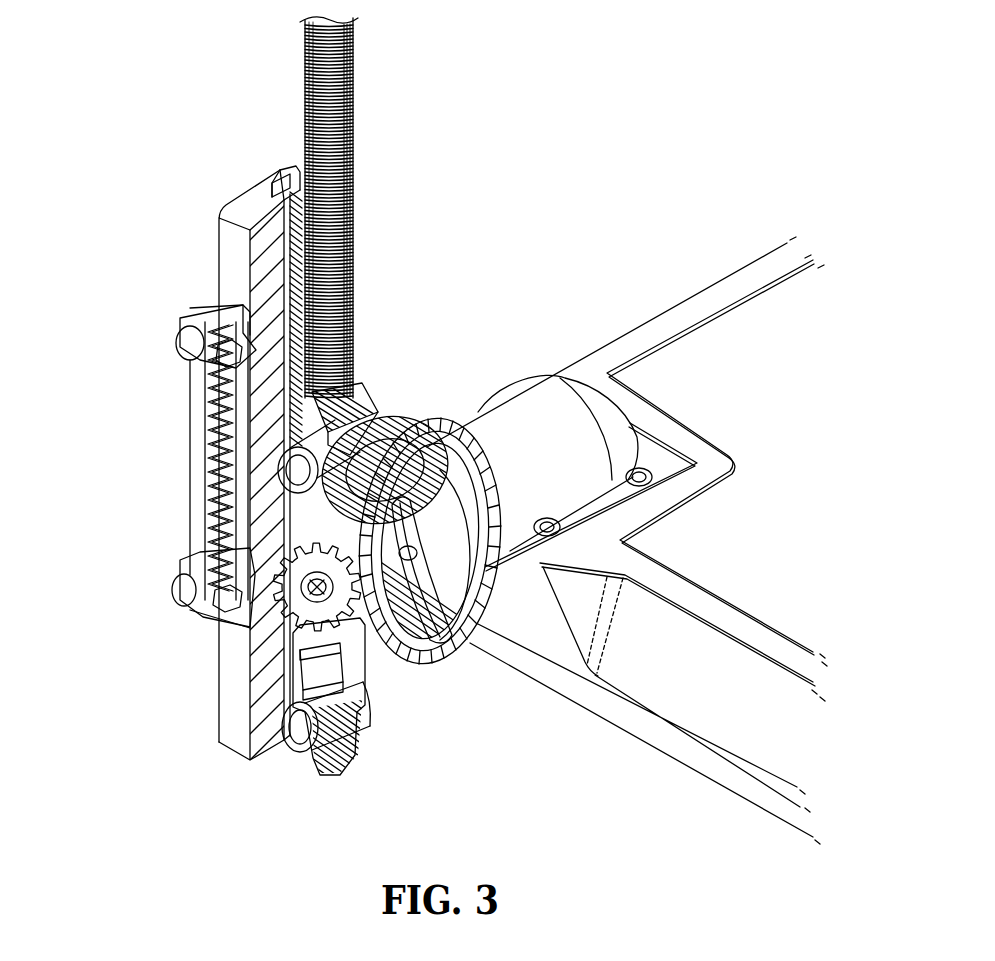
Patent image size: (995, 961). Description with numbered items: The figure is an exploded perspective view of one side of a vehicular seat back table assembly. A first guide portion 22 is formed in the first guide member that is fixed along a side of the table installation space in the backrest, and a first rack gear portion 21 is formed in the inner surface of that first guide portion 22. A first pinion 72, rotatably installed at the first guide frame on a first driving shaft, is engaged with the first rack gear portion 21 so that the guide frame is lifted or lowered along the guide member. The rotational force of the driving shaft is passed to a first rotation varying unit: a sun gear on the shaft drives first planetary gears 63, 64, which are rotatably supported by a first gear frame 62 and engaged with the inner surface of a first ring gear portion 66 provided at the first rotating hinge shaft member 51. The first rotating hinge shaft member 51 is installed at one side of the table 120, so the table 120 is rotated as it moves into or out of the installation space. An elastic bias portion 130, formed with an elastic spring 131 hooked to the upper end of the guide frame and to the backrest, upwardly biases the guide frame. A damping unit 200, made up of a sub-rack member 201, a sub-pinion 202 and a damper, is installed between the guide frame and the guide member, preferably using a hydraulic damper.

The elastic bias portion 130 is at (365, 104).
The elastic spring 131 is at (352, 142).
The first rack gear portion 21 is at (290, 297).
The first guide portion 22 is at (283, 177).
The damping unit 200 is at (125, 395).
The sub-rack member 201 is at (207, 430).
The sub-pinion 202 is at (190, 536).
The first planetary gear 63 is at (403, 423).
The first ring gear portion 66 is at (420, 430).
The first planetary gear 64 is at (445, 635).
The first gear frame 62 is at (403, 667).
The first pinion 72 is at (366, 700).
The first rotating hinge shaft member 51 is at (487, 465).
The table 120 is at (803, 528).